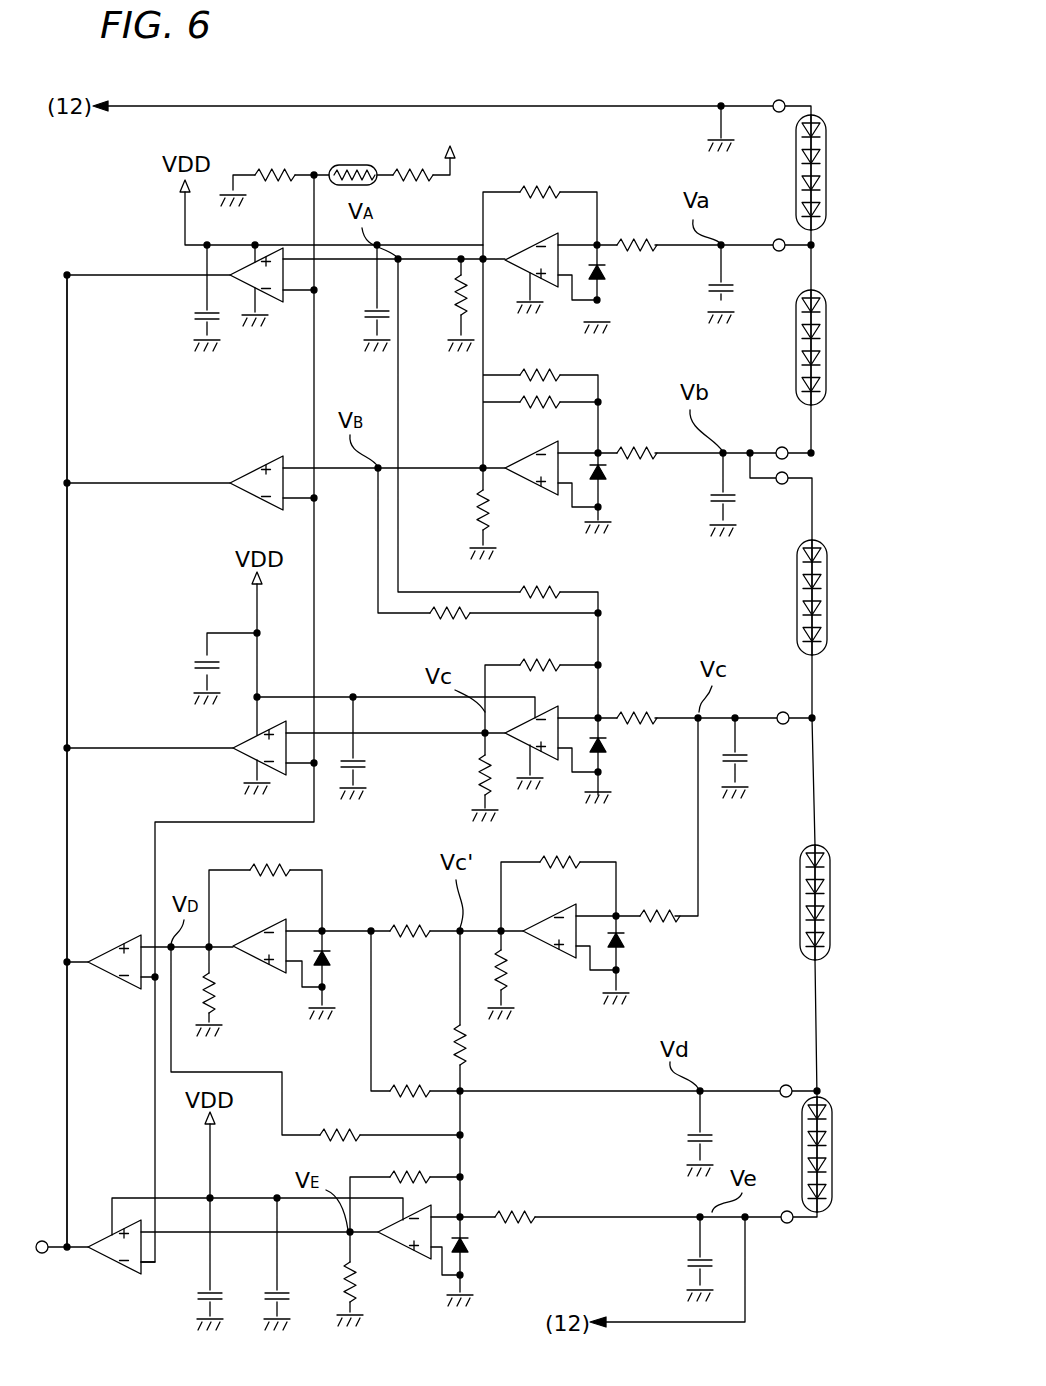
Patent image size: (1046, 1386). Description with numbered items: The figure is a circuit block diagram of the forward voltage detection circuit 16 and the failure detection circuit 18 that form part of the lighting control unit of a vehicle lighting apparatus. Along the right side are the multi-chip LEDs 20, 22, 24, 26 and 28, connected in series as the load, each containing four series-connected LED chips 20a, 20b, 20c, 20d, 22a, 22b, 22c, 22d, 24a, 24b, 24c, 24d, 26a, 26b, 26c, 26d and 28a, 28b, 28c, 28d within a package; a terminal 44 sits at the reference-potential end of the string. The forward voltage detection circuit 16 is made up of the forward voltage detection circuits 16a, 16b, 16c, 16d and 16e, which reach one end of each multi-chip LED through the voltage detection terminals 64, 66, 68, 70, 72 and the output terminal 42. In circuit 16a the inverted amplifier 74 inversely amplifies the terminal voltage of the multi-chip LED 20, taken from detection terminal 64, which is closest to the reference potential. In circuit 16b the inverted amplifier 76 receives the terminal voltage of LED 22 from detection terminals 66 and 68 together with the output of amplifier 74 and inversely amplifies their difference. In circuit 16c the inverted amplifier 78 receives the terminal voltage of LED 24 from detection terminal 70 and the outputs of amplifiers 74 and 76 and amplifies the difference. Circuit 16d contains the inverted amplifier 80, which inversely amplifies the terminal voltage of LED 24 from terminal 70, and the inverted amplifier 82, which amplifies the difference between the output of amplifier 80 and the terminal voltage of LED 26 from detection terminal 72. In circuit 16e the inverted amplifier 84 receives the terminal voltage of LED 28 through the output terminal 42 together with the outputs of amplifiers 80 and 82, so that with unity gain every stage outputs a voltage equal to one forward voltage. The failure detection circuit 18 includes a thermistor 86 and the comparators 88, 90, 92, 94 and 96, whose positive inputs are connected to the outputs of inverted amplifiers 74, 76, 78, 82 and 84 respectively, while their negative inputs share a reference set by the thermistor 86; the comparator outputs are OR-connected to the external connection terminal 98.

The forward voltage detection circuit 16 is at (594, 90).
The forward voltage detection circuit 16a is at (583, 207).
The forward voltage detection circuit 16b is at (607, 502).
The forward voltage detection circuit 16c is at (606, 713).
The forward voltage detection circuit 16d is at (634, 944).
The forward voltage detection circuit 16e is at (497, 1227).
The failure detection circuit 18 is at (324, 92).
The multi-chip LED 20 is at (845, 152).
The LED chip 20a is at (828, 131).
The LED chip 20b is at (828, 157).
The LED chip 20c is at (828, 184).
The LED chip 20d is at (828, 210).
The multi-chip LED 22 is at (845, 329).
The LED chip 22a is at (828, 306).
The LED chip 22b is at (828, 332).
The LED chip 22c is at (828, 359).
The LED chip 22d is at (828, 385).
The multi-chip LED 24 is at (846, 576).
The LED chip 24a is at (829, 556).
The LED chip 24b is at (829, 582).
The LED chip 24c is at (829, 609).
The LED chip 24d is at (829, 635).
The multi-chip LED 26 is at (849, 884).
The LED chip 26a is at (832, 861).
The LED chip 26b is at (832, 887).
The LED chip 26c is at (832, 914).
The LED chip 26d is at (832, 940).
The multi-chip LED 28 is at (852, 1136).
The LED chip 28a is at (834, 1113).
The LED chip 28b is at (834, 1139).
The LED chip 28c is at (834, 1166).
The LED chip 28d is at (834, 1192).
The output terminal 42 is at (790, 1226).
The terminal 44 is at (781, 100).
The voltage detection terminal 64 is at (779, 238).
The voltage detection terminal 66 is at (780, 447).
The voltage detection terminal 68 is at (790, 474).
The voltage detection terminal 70 is at (783, 712).
The voltage detection terminal 72 is at (784, 1084).
The inverted amplifier 74 is at (540, 242).
The inverted amplifier 76 is at (546, 490).
The inverted amplifier 78 is at (548, 756).
The inverted amplifier 80 is at (556, 913).
The inverted amplifier 82 is at (265, 930).
The inverted amplifier 84 is at (420, 1255).
The thermistor 86 is at (366, 163).
The comparator 88 is at (280, 302).
The comparator 90 is at (262, 467).
The comparator 92 is at (240, 753).
The comparator 94 is at (112, 950).
The comparator 96 is at (110, 1262).
The external connection terminal 98 is at (43, 1254).